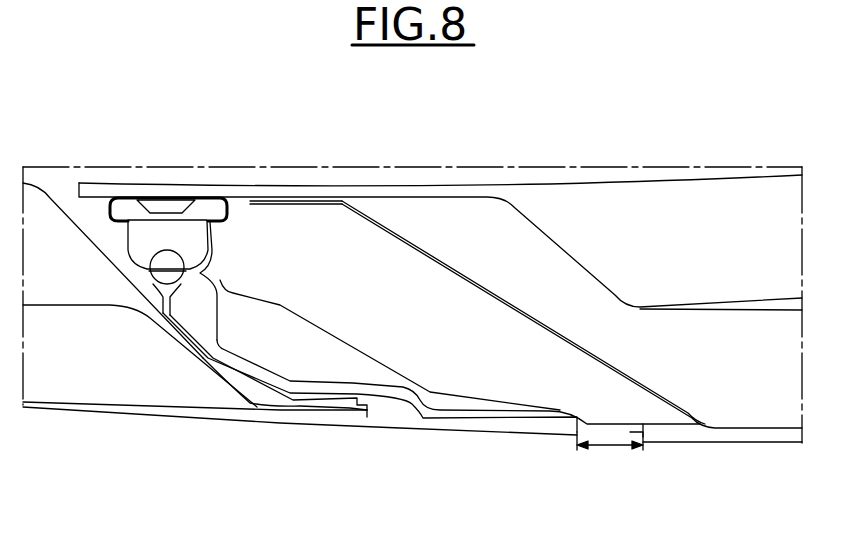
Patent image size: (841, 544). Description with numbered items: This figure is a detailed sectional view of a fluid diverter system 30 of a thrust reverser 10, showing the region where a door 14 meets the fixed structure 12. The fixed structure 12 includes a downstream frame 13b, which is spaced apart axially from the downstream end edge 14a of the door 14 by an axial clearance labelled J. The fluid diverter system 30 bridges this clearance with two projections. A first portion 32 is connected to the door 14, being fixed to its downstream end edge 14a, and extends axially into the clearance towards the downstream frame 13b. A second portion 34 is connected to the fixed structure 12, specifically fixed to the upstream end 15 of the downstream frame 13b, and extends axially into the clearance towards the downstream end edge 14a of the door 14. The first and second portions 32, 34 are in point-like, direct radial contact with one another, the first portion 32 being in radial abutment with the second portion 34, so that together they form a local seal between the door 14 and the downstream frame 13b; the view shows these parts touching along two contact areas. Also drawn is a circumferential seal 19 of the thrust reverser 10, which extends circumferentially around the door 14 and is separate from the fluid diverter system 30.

The thrust reverser 10 is at (553, 131).
The fixed structure 12 is at (85, 372).
The downstream frame 13b is at (482, 427).
The door 14 is at (731, 190).
The downstream end edge 14a is at (645, 437).
The upstream end 15 is at (595, 437).
The circumferential seal 19 is at (166, 234).
The fluid diverter system 30 is at (403, 460).
The first portion 32 is at (512, 382).
The second portion 34 is at (313, 387).